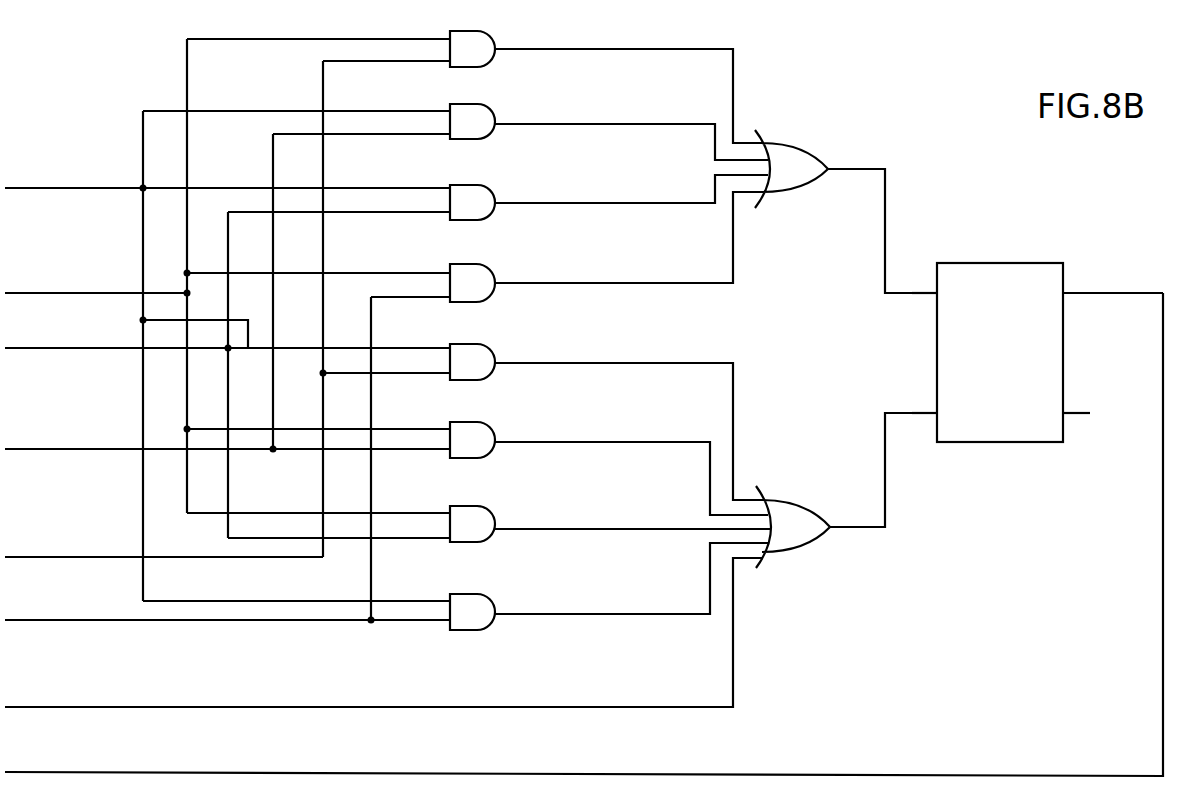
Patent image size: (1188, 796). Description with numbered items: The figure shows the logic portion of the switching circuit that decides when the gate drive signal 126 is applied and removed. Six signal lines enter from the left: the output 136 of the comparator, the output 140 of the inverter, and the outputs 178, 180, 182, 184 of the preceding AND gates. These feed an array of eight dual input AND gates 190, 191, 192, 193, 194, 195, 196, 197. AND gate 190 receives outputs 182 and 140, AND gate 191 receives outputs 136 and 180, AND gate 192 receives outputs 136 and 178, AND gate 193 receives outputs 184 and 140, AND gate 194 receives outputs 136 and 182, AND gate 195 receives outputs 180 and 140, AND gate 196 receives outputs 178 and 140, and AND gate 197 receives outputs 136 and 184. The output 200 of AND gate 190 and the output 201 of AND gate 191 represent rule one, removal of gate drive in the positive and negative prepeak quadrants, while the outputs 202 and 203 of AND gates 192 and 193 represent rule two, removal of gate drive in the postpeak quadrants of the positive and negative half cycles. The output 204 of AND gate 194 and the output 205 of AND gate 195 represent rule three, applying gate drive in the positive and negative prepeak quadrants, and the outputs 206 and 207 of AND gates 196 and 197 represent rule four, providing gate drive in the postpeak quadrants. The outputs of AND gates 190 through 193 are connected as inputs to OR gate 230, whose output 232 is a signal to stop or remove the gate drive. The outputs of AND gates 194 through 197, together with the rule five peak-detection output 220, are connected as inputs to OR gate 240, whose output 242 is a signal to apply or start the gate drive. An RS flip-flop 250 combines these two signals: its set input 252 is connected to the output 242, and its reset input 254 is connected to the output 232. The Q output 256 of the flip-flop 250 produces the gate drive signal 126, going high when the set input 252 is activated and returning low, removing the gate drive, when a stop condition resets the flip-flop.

The gate drive signal GDS 126 is at (61, 771).
The output of the comparator 136 is at (50, 186).
The output of the inverter 140 is at (54, 292).
The output of AND gate 170 178 is at (58, 347).
The output of AND gate 172 180 is at (56, 448).
The output of AND gate 174 182 is at (58, 556).
The output of AND gate 176 184 is at (64, 619).
The AND gate 190 is at (452, 32).
The AND gate 191 is at (460, 104).
The AND gate 192 is at (461, 185).
The AND gate 193 is at (461, 264).
The AND gate 194 is at (458, 344).
The AND gate 195 is at (461, 422).
The AND gate 196 is at (467, 506).
The AND gate 197 is at (463, 594).
The output of AND gate 190 200 is at (552, 51).
The output of AND gate 191 201 is at (556, 126).
The output of AND gate 192 202 is at (558, 205).
The output of AND gate 193 203 is at (559, 285).
The output of AND gate 194 204 is at (562, 365).
The output of AND gate 195 205 is at (560, 444).
The output of AND gate 196 206 is at (558, 531).
The output of AND gate 197 207 is at (556, 616).
The output of OR gate 214 220 is at (56, 706).
The OR gate 230 is at (788, 145).
The output of OR gate 230 232 is at (868, 170).
The OR gate 240 is at (788, 553).
The output of OR gate 240 242 is at (857, 530).
The RS flip-flop 250 is at (1003, 263).
The set input S 252 is at (936, 410).
The reset input R 254 is at (936, 297).
The Q output 256 is at (1067, 294).